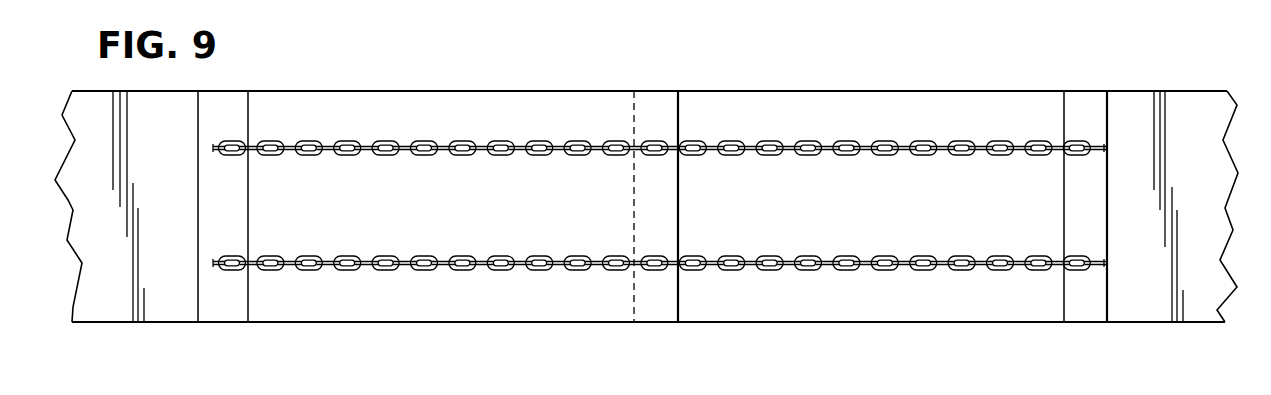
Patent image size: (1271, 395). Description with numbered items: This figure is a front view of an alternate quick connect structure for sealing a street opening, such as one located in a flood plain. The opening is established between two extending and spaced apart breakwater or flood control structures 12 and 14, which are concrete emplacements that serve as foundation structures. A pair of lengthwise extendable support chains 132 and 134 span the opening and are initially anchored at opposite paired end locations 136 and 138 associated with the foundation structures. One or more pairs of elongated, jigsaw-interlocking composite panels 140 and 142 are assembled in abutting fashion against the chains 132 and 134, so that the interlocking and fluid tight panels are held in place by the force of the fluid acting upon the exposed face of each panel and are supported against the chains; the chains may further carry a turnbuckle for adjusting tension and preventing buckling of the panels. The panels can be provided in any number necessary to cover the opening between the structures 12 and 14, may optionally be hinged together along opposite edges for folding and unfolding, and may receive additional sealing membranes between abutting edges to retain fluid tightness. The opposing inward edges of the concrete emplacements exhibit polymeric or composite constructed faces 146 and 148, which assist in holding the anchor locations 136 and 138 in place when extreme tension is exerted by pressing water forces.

The breakwater or flood control structure 12 is at (122, 297).
The breakwater or flood control structure 14 is at (1150, 307).
The lengthwise extendable support chain 132 is at (393, 139).
The lengthwise extendable support chain 134 is at (393, 257).
The end location 136 is at (212, 148).
The end location 138 is at (1100, 148).
The jigsaw-interlocking composite panel 140 is at (493, 297).
The jigsaw-interlocking composite panel 142 is at (885, 298).
The polymeric or composite constructed face 146 is at (222, 308).
The polymeric or composite constructed face 148 is at (1080, 297).